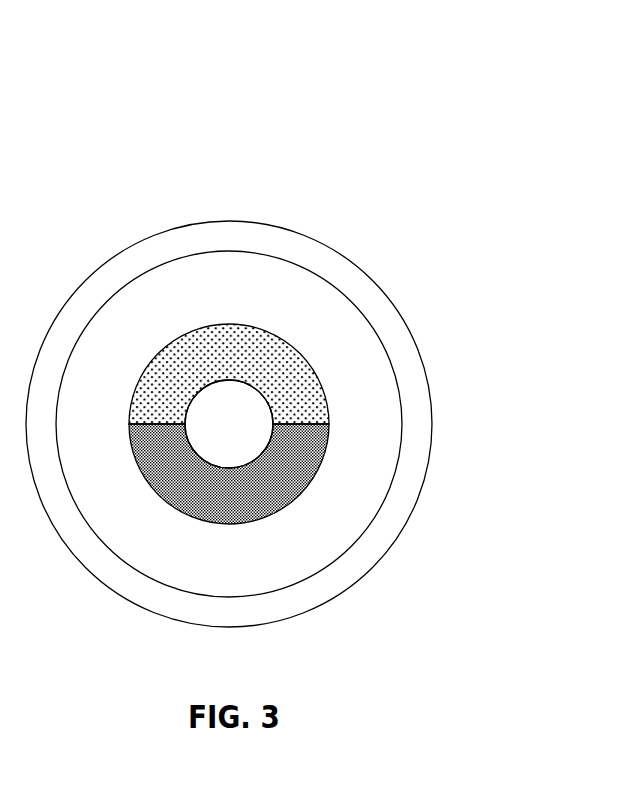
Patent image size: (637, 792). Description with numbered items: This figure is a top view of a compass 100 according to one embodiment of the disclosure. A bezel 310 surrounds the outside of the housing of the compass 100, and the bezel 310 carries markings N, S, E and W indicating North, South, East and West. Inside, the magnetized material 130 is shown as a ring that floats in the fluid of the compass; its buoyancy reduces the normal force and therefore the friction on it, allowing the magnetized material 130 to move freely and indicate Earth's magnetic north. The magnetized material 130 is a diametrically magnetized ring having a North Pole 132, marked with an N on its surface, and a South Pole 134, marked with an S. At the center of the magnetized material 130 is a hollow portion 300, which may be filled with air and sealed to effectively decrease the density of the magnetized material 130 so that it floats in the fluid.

The compass 100 is at (278, 320).
The bezel 310 is at (290, 228).
The magnetized material 130 is at (330, 438).
The North Pole 132 is at (298, 400).
The South Pole 134 is at (272, 518).
The hollow portion 300 is at (250, 438).